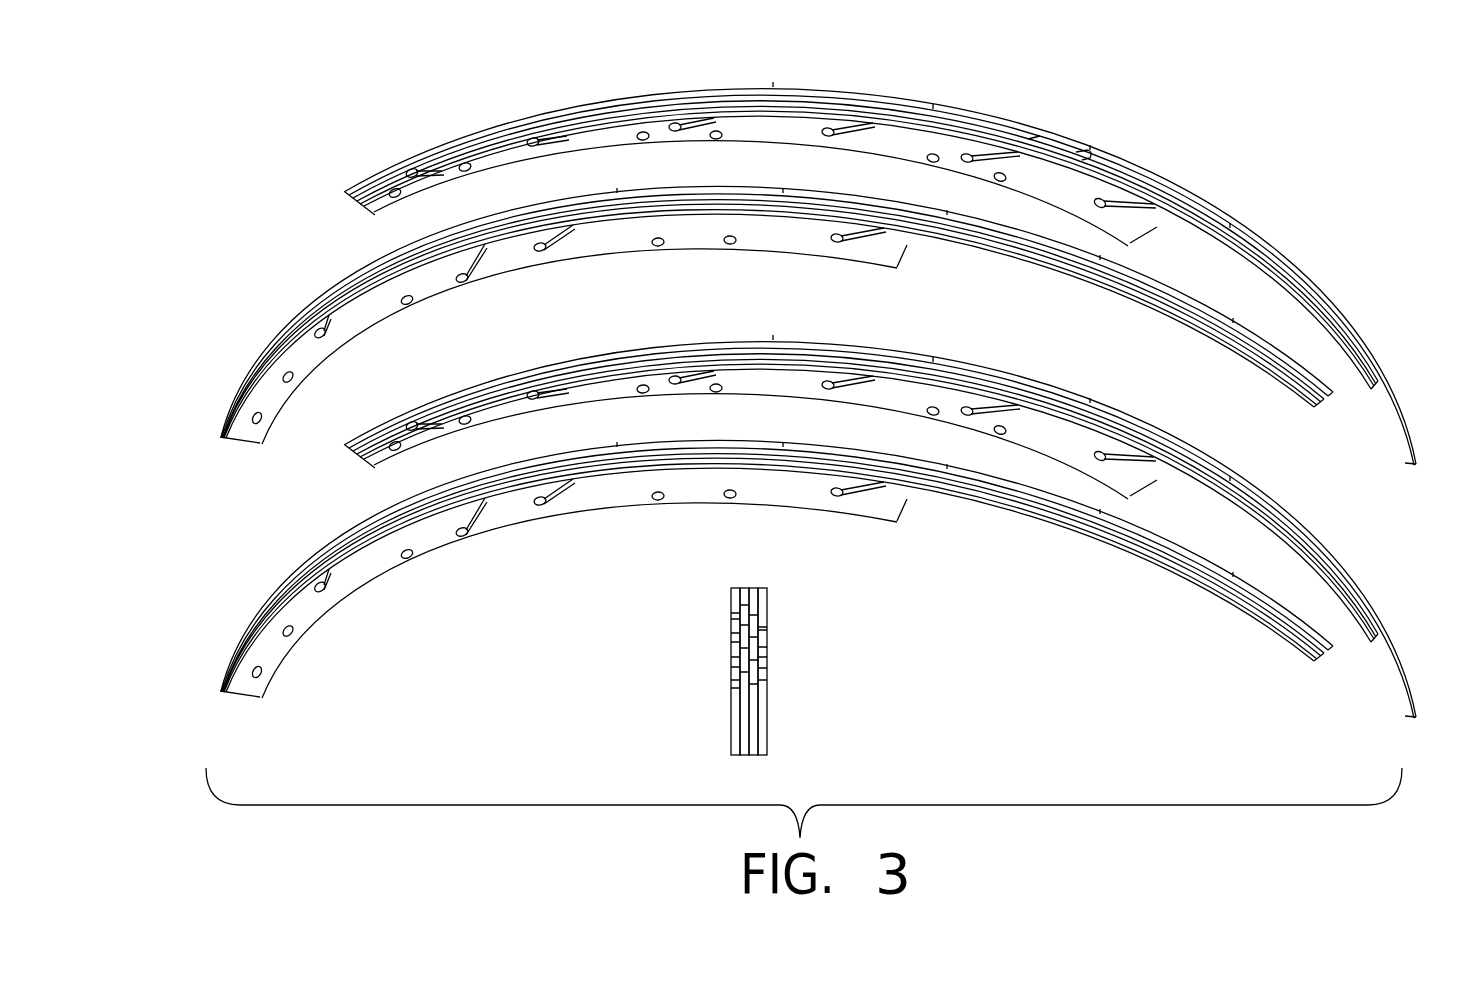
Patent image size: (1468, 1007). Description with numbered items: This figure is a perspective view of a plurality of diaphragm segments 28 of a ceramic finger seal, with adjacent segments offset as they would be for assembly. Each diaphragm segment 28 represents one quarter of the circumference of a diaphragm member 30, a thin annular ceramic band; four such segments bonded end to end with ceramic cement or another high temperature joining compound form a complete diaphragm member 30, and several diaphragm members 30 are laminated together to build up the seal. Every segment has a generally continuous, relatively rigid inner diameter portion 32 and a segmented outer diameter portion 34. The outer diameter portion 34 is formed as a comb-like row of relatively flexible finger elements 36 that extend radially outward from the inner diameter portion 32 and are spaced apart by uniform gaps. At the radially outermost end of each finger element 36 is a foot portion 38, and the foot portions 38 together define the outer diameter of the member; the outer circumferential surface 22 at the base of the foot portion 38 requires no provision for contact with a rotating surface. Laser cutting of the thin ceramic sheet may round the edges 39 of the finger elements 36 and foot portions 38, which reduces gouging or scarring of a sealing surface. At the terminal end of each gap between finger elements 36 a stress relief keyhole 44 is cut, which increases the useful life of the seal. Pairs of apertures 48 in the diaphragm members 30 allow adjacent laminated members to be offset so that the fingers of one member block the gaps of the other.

The outer circumferential surface 22 is at (1000, 172).
The diaphragm segment 28 is at (395, 162).
The diaphragm member 30 is at (745, 755).
The inner diameter portion 32 is at (490, 510).
The outer diameter portion 34 is at (1083, 152).
The finger element 36 is at (680, 125).
The foot portion 38 is at (1132, 175).
The edge 39 is at (1410, 470).
The stress relief keyhole 44 is at (675, 125).
The aperture 48 is at (643, 133).